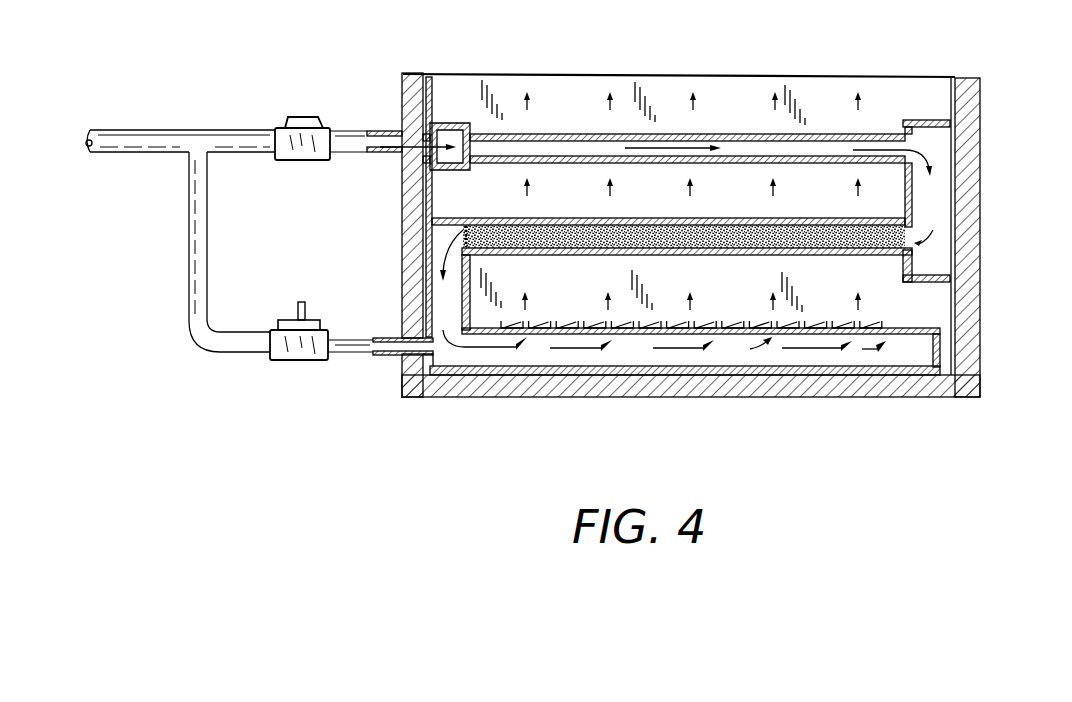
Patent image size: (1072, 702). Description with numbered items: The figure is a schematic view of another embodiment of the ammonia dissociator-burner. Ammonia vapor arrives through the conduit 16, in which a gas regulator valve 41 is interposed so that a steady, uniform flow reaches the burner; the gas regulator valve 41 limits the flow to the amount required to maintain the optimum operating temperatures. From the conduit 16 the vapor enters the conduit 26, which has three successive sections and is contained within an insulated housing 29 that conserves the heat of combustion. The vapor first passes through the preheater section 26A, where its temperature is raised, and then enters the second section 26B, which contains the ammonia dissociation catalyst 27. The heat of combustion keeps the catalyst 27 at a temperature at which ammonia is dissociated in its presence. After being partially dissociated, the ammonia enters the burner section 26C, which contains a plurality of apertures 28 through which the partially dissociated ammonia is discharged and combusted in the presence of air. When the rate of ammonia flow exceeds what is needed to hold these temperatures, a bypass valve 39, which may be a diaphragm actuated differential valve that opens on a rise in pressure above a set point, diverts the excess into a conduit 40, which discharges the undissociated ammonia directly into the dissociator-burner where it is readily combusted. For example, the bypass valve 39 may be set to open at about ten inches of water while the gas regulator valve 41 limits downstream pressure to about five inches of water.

The conduit 16 is at (178, 130).
The conduit 26 is at (397, 65).
The preheater section 26A is at (735, 133).
The second section 26B is at (867, 218).
The burner section 26C is at (917, 330).
The catalyst 27 is at (672, 222).
The apertures 28 is at (775, 321).
The insulated housing 29 is at (983, 116).
The bypass valve 39 is at (298, 302).
The conduit 40 is at (356, 356).
The gas regulator valve 41 is at (296, 117).